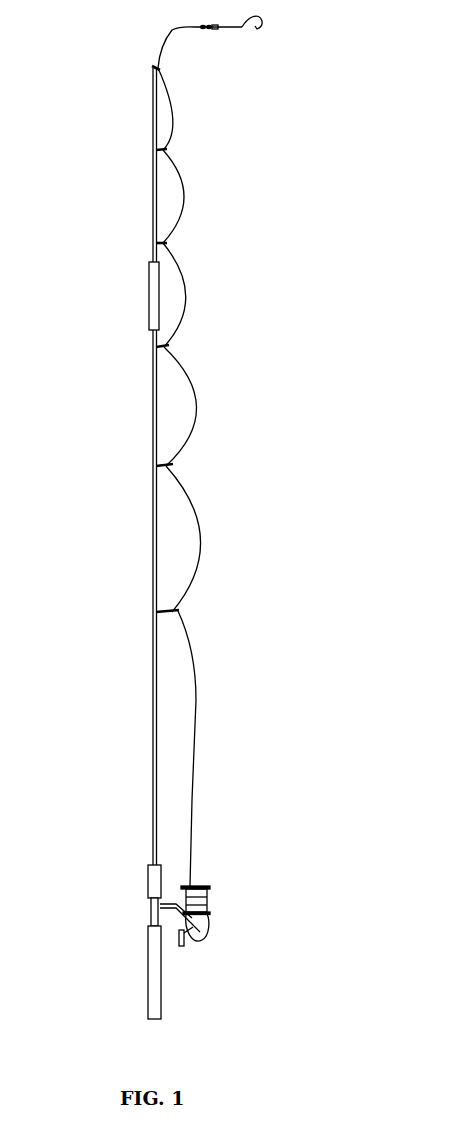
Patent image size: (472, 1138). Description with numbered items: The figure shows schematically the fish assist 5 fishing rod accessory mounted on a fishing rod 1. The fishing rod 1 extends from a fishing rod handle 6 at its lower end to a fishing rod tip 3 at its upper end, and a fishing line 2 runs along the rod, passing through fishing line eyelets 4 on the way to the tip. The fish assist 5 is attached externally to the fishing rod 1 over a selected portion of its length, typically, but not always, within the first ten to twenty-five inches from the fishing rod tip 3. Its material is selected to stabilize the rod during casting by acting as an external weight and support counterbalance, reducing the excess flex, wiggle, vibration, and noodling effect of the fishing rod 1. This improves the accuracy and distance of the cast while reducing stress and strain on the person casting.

The fishing rod 1 is at (152, 554).
The fishing line 2 is at (199, 693).
The fishing rod tip 3 is at (151, 66).
The fishing line eyelets 4 is at (167, 622).
The fish assist 5 is at (147, 300).
The fishing rod handle 6 is at (145, 954).